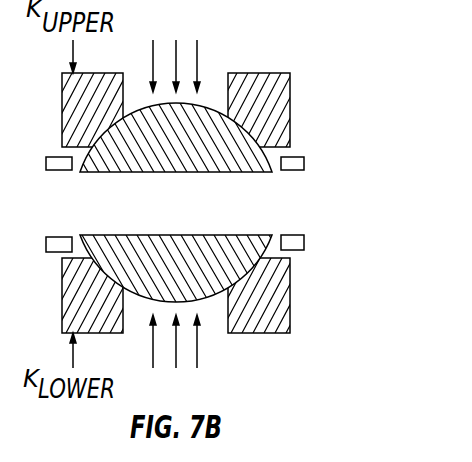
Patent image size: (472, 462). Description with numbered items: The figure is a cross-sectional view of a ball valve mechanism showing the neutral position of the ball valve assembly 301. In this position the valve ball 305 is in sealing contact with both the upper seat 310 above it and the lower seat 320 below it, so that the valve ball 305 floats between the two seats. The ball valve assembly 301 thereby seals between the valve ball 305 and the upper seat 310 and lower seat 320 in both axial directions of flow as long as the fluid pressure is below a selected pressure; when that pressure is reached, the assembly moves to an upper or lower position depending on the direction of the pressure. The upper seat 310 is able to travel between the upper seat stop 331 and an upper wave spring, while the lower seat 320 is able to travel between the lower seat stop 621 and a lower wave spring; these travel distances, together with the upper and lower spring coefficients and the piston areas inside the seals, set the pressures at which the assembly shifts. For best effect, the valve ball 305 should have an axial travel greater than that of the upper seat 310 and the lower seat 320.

The ball valve assembly 301 is at (247, 63).
The upper seat 310 is at (281, 110).
The valve ball 305 is at (244, 172).
The upper seat stop 331 is at (302, 164).
The lower seat stop 621 is at (303, 243).
The lower seat 320 is at (287, 308).